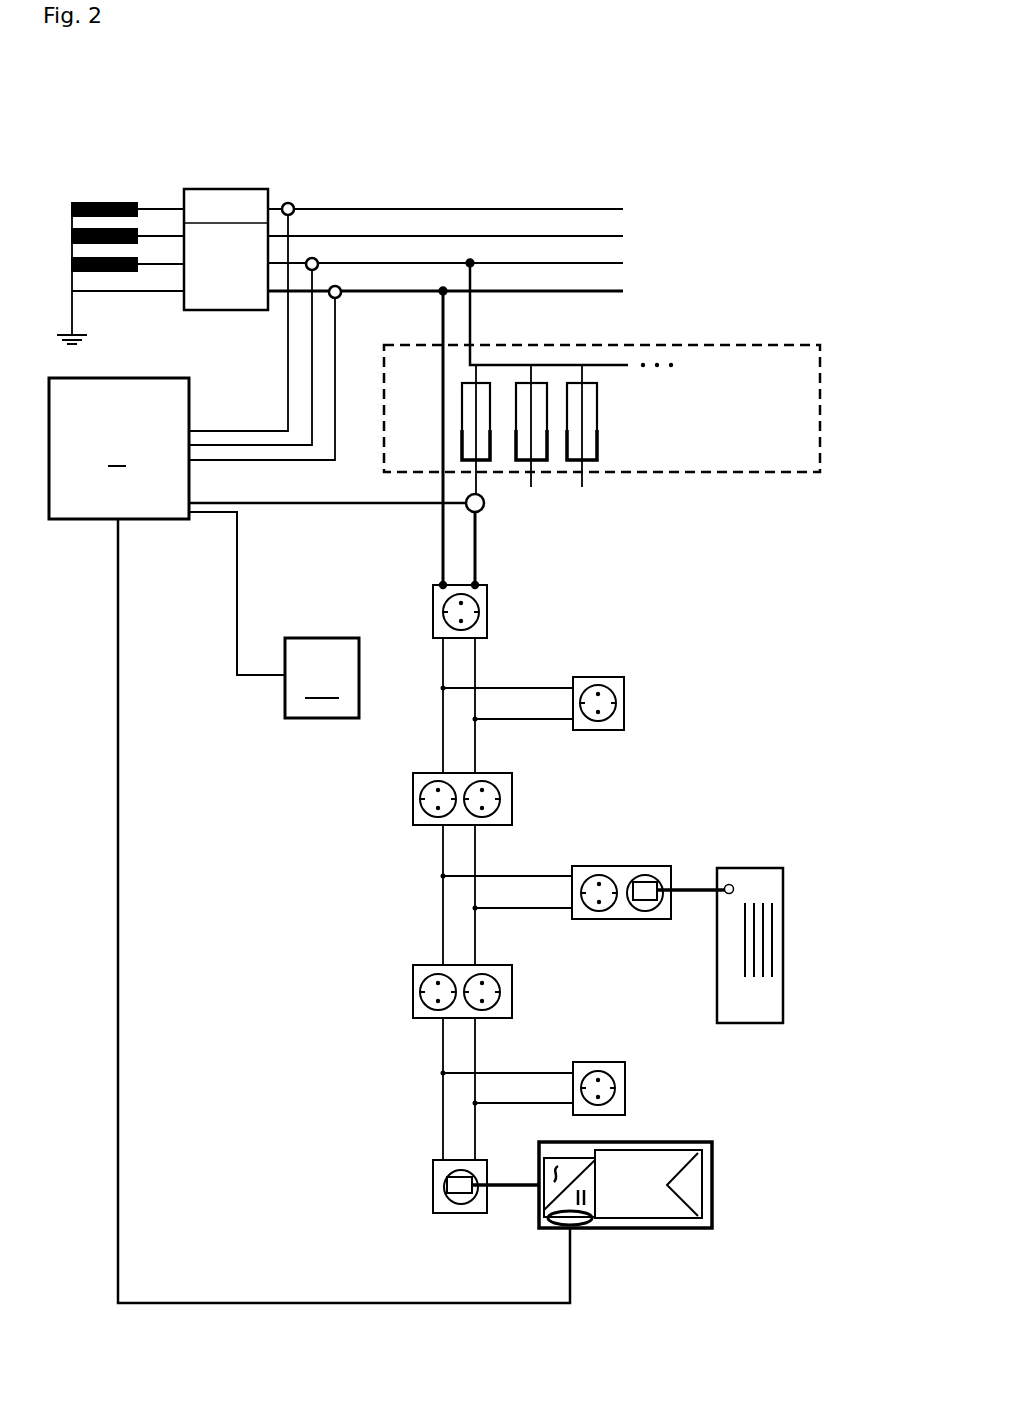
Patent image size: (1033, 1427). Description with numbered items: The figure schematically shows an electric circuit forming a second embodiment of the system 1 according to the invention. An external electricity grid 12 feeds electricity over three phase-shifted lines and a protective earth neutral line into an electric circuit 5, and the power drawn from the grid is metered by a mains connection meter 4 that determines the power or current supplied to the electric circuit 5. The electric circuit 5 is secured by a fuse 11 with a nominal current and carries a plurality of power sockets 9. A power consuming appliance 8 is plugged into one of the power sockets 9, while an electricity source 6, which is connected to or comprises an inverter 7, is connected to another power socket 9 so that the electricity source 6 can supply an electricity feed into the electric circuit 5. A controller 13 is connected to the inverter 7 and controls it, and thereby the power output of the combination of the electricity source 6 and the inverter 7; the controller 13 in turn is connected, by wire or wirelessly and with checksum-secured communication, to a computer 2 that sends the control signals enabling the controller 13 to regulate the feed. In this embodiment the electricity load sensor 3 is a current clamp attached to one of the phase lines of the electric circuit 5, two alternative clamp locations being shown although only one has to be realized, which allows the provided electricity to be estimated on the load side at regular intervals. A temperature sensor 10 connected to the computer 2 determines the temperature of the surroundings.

The system 1 is at (548, 157).
The computer 2 is at (309, 759).
The electricity load sensor 3 is at (319, 262).
The mains connection meter 4 is at (251, 237).
The electric circuit 5 is at (443, 898).
The electricity source 6 is at (713, 1185).
The inverter 7 is at (592, 1173).
The power consuming appliance 8 is at (755, 888).
The power socket 9 is at (620, 698).
The temperature sensor 10 is at (322, 678).
The fuse 11 is at (483, 432).
The external electricity grid 12 is at (87, 210).
The controller 13 is at (572, 1222).